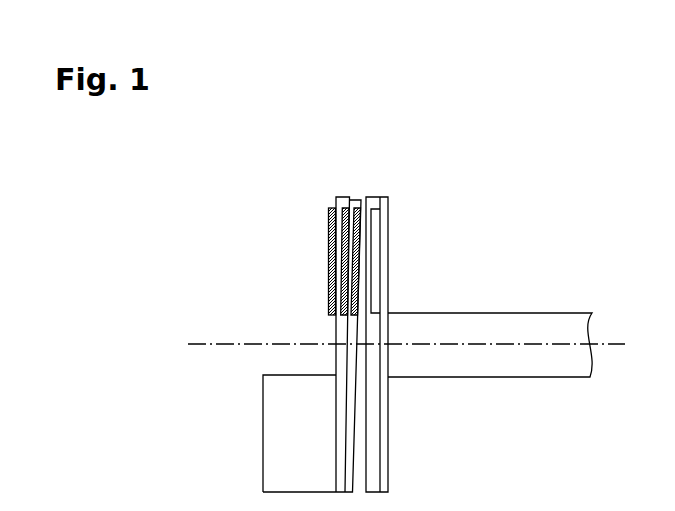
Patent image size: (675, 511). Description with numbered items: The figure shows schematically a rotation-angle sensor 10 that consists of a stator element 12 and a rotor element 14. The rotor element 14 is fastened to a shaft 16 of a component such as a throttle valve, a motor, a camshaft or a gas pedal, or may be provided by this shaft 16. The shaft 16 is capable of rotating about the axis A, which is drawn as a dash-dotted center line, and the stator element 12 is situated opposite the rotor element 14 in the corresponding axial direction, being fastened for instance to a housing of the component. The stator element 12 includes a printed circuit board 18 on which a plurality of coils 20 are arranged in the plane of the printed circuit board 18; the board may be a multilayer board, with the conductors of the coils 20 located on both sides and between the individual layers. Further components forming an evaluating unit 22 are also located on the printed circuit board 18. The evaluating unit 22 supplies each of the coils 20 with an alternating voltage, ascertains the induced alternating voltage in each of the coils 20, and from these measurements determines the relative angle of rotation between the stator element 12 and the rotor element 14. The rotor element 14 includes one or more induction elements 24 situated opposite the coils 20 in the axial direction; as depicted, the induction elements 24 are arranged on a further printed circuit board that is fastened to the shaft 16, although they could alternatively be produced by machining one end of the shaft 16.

The rotation-angle sensor 10 is at (493, 185).
The stator element 12 is at (302, 183).
The rotor element 14 is at (403, 183).
The shaft 16 is at (488, 365).
The printed circuit board 18 is at (353, 476).
The coils 20 is at (350, 183).
The evaluating unit 22 is at (263, 475).
The induction elements 24 is at (372, 254).
The axis A is at (193, 347).